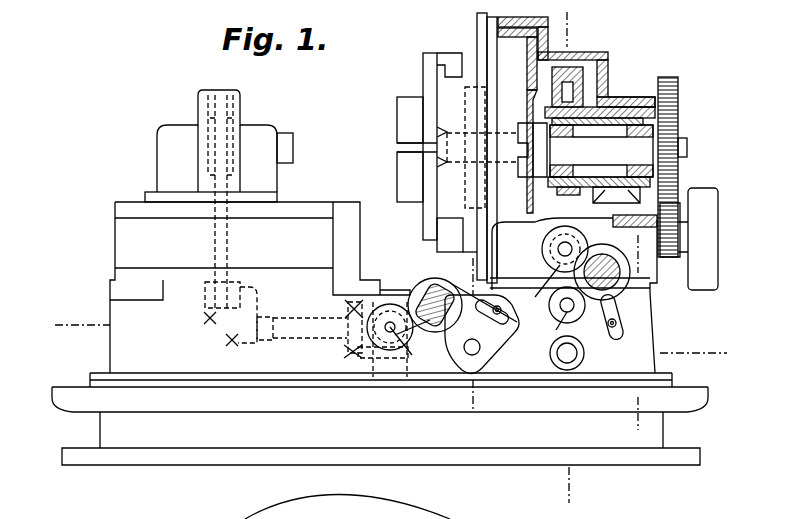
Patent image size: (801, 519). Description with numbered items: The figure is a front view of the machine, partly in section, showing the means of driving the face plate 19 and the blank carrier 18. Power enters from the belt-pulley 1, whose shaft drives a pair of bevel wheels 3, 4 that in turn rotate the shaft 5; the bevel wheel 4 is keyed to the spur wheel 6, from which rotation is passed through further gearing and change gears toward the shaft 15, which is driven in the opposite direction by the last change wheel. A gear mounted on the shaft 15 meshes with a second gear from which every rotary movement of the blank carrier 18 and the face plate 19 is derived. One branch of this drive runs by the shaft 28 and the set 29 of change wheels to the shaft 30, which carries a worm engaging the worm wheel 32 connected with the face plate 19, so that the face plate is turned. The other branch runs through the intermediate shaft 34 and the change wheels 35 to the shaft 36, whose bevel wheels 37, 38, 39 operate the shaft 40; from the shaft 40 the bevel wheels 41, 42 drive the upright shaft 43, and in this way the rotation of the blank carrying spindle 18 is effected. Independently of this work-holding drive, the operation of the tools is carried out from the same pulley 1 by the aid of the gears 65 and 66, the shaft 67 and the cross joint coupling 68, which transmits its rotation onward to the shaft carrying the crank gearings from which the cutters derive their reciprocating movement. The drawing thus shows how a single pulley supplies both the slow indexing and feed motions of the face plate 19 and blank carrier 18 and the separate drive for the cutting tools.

The belt-pulley 1 is at (718, 235).
The bevel wheel 3 is at (562, 259).
The bevel wheel 4 is at (472, 333).
The shaft 5 is at (383, 345).
The spur wheel 6 is at (627, 333).
The shaft 15 is at (584, 356).
The blank carrier 18 is at (283, 140).
The face plate 19 is at (447, 83).
The shaft 28 is at (575, 319).
The set of change wheels 29 is at (558, 306).
The shaft 30 is at (558, 250).
The worm wheel 32 is at (580, 83).
The intermediate shaft 34 is at (481, 349).
The change wheels 35 is at (428, 292).
The shaft 36 is at (395, 332).
The bevel wheel 37 is at (390, 320).
The bevel wheel 38 is at (360, 348).
The bevel wheel 39 is at (352, 318).
The shaft 40 is at (287, 328).
The bevel wheel 41 is at (233, 340).
The bevel wheel 42 is at (215, 316).
The upright shaft 43 is at (222, 244).
The gear 65 is at (672, 258).
The gear 66 is at (672, 127).
The shaft 67 is at (636, 110).
The cross joint coupling 68 is at (525, 125).